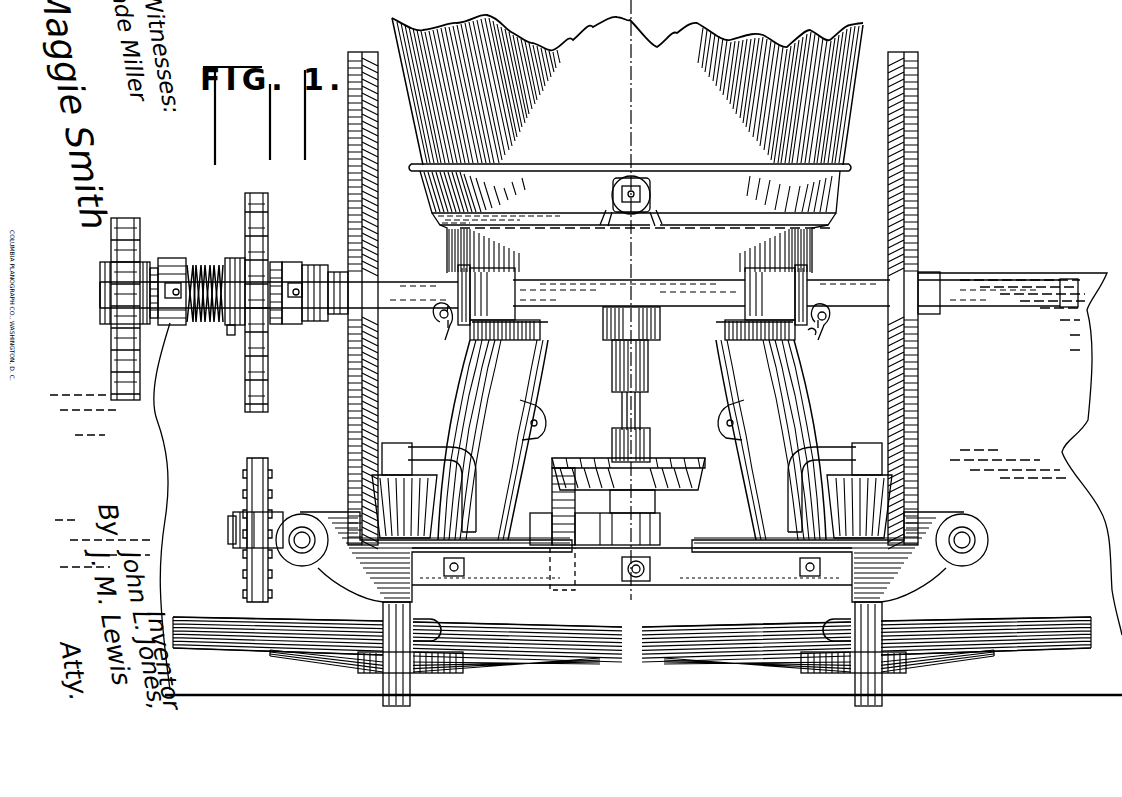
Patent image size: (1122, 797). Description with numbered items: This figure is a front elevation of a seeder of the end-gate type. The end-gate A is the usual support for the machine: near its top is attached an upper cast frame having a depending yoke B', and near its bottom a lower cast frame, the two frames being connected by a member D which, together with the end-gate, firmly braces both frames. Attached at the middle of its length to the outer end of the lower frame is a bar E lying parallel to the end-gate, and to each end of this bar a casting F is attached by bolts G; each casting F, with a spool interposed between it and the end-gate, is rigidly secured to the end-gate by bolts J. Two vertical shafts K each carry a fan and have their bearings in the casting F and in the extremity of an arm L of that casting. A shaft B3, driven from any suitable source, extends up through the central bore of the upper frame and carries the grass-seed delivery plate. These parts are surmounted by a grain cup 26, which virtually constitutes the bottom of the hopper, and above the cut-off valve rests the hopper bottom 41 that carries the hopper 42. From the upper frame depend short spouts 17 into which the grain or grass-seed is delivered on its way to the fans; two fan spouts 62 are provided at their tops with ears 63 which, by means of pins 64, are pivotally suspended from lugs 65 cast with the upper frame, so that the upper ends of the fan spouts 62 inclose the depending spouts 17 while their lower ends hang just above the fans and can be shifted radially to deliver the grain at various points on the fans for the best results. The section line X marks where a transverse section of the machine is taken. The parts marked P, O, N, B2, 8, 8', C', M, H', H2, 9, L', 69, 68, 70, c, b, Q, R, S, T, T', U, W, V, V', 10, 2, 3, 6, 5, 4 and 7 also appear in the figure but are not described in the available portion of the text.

The end-gate A is at (1020, 454).
The hopper 42 is at (627, 90).
The hopper bottom 41 is at (630, 195).
The grain cup 26 is at (635, 249).
The upright post P is at (627, 300).
The shaft O is at (403, 288).
The depending spouts 17 is at (545, 320).
The ears 63 is at (847, 334).
The pins 64 is at (447, 330).
The lugs 65 is at (810, 338).
The fan spouts 62 is at (632, 440).
The arm upper end N is at (504, 302).
The depending yoke B' is at (645, 333).
The sleeve B2 is at (611, 366).
The connecting member D is at (620, 406).
The shaft B3 is at (644, 429).
The bevel gear 8 is at (628, 485).
The bevel pinion 8' is at (552, 509).
The collar C' is at (633, 524).
The vertical shafts K is at (398, 441).
The arm L is at (632, 479).
The bracket M is at (425, 495).
The casting F is at (940, 585).
The bolts J is at (300, 552).
The bracket H' is at (281, 508).
The stub shaft H2 is at (214, 518).
The sprocket wheel 9 is at (249, 530).
The bar E is at (632, 569).
The bolts G is at (470, 578).
The section line X is at (636, 586).
The leaf spring L' is at (632, 657).
The spring leaf 69 is at (1032, 605).
The spring leaf 68 is at (490, 670).
The spring clip 70 is at (205, 618).
The spring clamp c is at (440, 676).
The post b is at (388, 706).
The drive chain Q is at (102, 351).
The sprocket hub R is at (130, 317).
The washer S is at (176, 325).
The clutch collar T is at (168, 277).
The clutch key T' is at (184, 250).
The pin U is at (180, 280).
The spring W is at (205, 305).
The collar V is at (230, 273).
The set screw V' is at (224, 351).
The chain 10 is at (240, 305).
The sprocket 2 is at (275, 268).
The hub 3 is at (280, 326).
The key 6 is at (296, 275).
The pin 5 is at (300, 280).
The collar 4 is at (300, 326).
The collar 7 is at (332, 318).